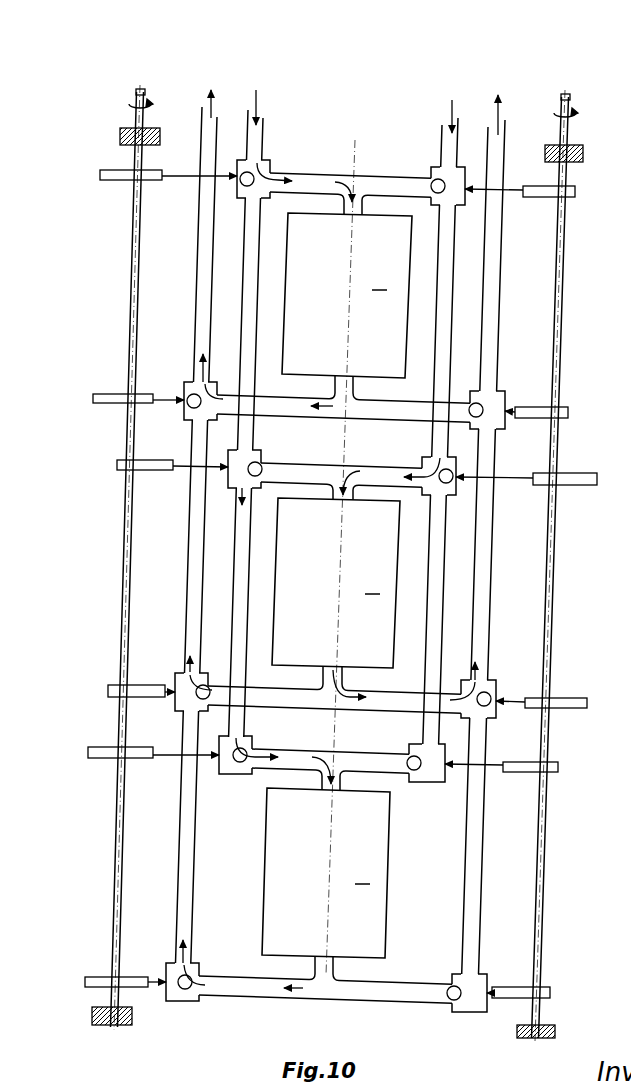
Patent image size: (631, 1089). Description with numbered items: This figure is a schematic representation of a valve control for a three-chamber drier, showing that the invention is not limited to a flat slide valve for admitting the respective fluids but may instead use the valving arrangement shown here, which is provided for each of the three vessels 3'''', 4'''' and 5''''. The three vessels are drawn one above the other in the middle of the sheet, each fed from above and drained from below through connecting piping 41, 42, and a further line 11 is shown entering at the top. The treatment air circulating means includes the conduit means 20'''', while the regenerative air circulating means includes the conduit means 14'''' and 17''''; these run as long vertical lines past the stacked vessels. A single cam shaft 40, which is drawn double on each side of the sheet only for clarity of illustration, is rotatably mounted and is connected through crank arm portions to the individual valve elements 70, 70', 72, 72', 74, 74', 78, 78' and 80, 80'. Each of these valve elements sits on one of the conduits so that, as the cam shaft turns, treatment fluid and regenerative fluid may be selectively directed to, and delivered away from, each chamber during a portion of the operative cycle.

The cam shaft 40 is at (137, 108).
The conduit means 20'''' is at (220, 501).
The conduit 11 is at (263, 118).
The conduit means 14'''' is at (435, 394).
The conduit means 17'''' is at (485, 509).
The supply pipe 41 is at (358, 176).
The return pipe 42 is at (377, 410).
The vessel 3'''' is at (347, 295).
The vessel 4'''' is at (336, 583).
The vessel 5'''' is at (326, 873).
The valve element 70 is at (185, 190).
The valve element 70' is at (503, 230).
The valve element 72 is at (155, 408).
The valve element 72' is at (518, 427).
The valve element 74 is at (189, 498).
The valve element 74' is at (509, 505).
The valve element 78 is at (159, 699).
The valve element 78' is at (524, 714).
The valve element 80 is at (170, 779).
The valve element 80' is at (482, 783).